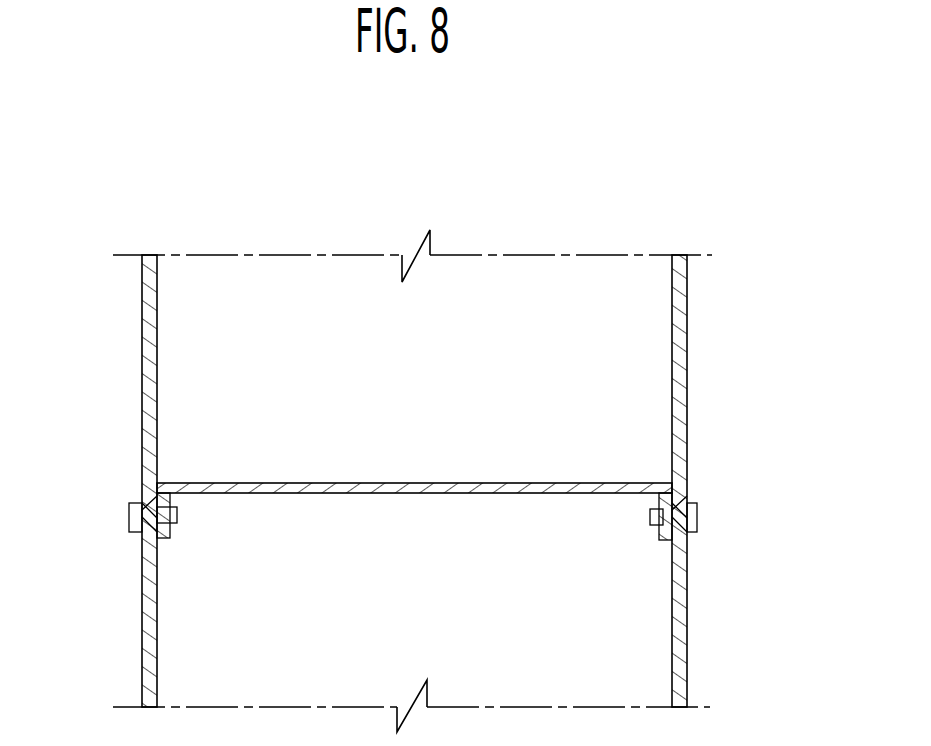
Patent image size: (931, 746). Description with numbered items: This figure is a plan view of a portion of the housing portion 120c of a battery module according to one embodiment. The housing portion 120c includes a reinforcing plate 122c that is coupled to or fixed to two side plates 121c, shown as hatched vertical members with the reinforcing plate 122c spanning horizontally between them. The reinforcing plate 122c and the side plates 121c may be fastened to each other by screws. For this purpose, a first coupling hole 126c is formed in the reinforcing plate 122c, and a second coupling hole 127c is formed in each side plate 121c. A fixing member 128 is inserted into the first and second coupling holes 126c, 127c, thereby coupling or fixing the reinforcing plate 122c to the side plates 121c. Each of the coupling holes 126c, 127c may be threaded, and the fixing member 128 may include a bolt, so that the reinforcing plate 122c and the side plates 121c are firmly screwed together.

The housing portion 120c is at (133, 176).
The side plate 121c is at (678, 250).
The reinforcing plate 122c is at (384, 472).
The first coupling hole 126c is at (147, 485).
The second coupling hole 127c is at (133, 500).
The fixing member 128 is at (697, 518).